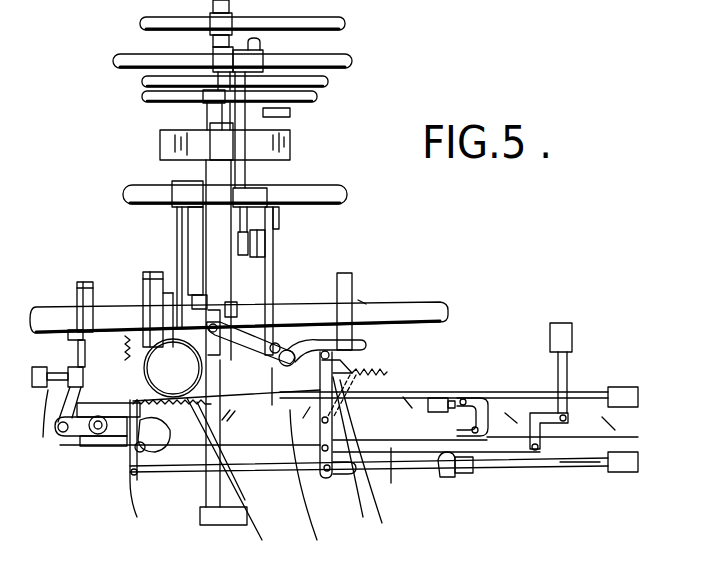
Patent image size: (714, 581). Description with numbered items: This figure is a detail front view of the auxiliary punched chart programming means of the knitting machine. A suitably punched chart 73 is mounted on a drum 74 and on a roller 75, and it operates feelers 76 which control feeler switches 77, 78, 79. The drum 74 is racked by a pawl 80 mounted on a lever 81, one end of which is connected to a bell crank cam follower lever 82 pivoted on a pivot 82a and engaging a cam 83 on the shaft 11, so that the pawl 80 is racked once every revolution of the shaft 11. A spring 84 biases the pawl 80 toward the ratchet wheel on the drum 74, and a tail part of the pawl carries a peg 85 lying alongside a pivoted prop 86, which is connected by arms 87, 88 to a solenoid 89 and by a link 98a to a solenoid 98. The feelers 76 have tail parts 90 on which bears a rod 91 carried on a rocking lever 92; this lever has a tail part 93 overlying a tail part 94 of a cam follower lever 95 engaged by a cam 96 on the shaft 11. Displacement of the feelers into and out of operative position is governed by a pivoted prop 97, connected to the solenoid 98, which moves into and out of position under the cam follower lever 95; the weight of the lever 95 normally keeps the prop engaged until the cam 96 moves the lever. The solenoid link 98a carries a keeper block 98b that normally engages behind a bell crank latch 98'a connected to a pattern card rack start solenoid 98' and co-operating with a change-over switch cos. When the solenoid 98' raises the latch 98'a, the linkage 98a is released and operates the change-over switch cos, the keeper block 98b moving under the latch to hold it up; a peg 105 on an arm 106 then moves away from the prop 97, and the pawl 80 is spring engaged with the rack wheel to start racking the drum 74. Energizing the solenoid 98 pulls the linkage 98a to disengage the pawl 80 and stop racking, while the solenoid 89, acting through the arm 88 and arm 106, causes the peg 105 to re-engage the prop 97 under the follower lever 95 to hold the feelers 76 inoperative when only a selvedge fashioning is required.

The shaft 11 is at (30, 325).
The punched chart 73 is at (217, 433).
The drum 74 is at (223, 535).
The roller 75 is at (177, 397).
The feelers 76 is at (127, 335).
The feeler switch 77 is at (195, 297).
The feeler switch 78 is at (233, 305).
The feeler switch 79 is at (235, 385).
The pawl 80 is at (118, 437).
The lever 81 is at (98, 418).
The bell crank cam follower lever 82 is at (67, 357).
The pivot 82a is at (73, 458).
The cam 83 is at (78, 287).
The spring 84 is at (239, 485).
The peg 85 is at (143, 452).
The pivoted prop 86 is at (137, 500).
The arm 87 is at (317, 491).
The arm 88 is at (393, 483).
The solenoid 89 is at (567, 328).
The tail parts 90 is at (243, 343).
The rod 91 is at (278, 404).
The rocking lever 92 is at (322, 474).
The tail part 93 is at (362, 346).
The tail part 94 is at (345, 362).
The cam follower lever 95 is at (362, 300).
The cam 96 is at (350, 273).
The pivoted prop 97 is at (357, 460).
The solenoid 98 is at (410, 462).
The pattern card rack start solenoid 98' is at (488, 382).
The solenoid link 98a is at (585, 467).
The keeper block 98b is at (473, 467).
The bell crank latch 98'a is at (471, 498).
The peg 105 is at (352, 385).
The arm 106 is at (390, 465).
The change-over switch cos is at (428, 405).